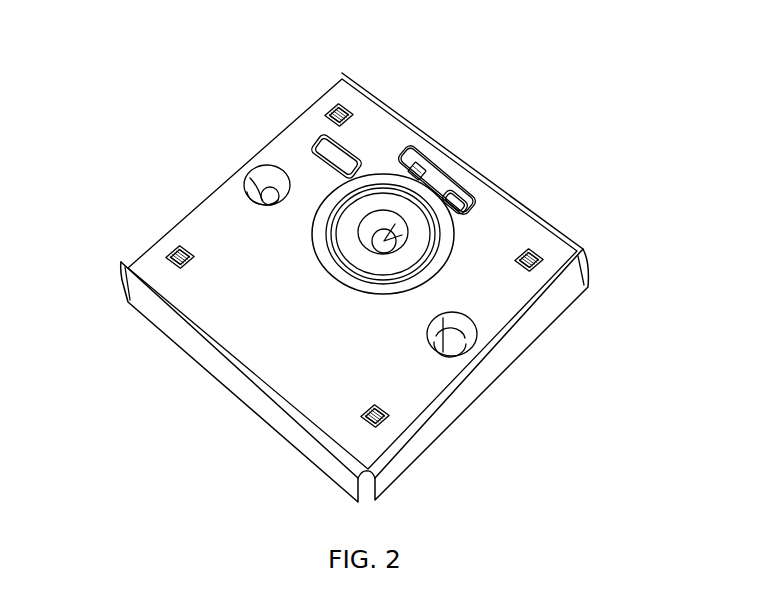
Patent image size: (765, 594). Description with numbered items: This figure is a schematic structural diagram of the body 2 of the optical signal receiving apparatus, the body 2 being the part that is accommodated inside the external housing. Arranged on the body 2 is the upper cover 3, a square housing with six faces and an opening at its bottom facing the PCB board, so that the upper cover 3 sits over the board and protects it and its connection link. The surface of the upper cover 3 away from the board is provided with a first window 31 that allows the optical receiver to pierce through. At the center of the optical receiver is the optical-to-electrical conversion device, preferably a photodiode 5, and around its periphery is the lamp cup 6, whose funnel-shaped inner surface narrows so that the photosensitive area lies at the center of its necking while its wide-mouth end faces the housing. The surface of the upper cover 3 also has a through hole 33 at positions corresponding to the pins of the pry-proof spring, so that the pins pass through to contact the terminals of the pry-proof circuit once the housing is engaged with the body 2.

The body 2 is at (372, 266).
The upper cover 3 is at (253, 313).
The first window 31 is at (313, 240).
The through hole 33 is at (345, 173).
The photodiode 5 is at (385, 237).
The lamp cup 6 is at (430, 263).